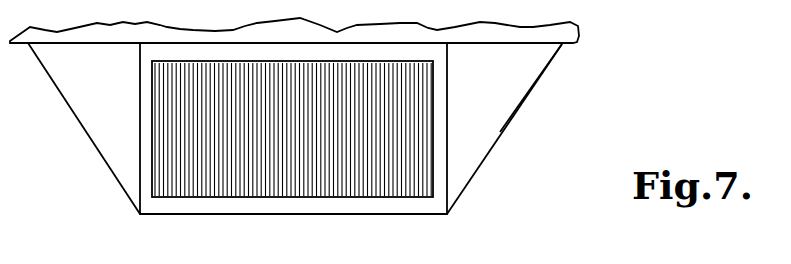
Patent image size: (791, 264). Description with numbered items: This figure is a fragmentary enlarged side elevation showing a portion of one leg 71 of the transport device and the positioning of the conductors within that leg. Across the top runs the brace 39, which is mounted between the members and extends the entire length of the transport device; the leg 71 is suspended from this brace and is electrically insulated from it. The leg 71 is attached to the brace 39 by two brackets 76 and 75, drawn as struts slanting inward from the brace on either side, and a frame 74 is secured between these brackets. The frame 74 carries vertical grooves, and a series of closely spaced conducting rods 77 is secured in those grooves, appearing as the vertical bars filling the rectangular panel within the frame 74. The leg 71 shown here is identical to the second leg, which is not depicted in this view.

The brace 39 is at (558, 36).
The leg 71 is at (541, 105).
The frame 74 is at (427, 207).
The bracket 75 is at (482, 145).
The bracket 76 is at (118, 163).
The conducting rods 77 is at (278, 182).